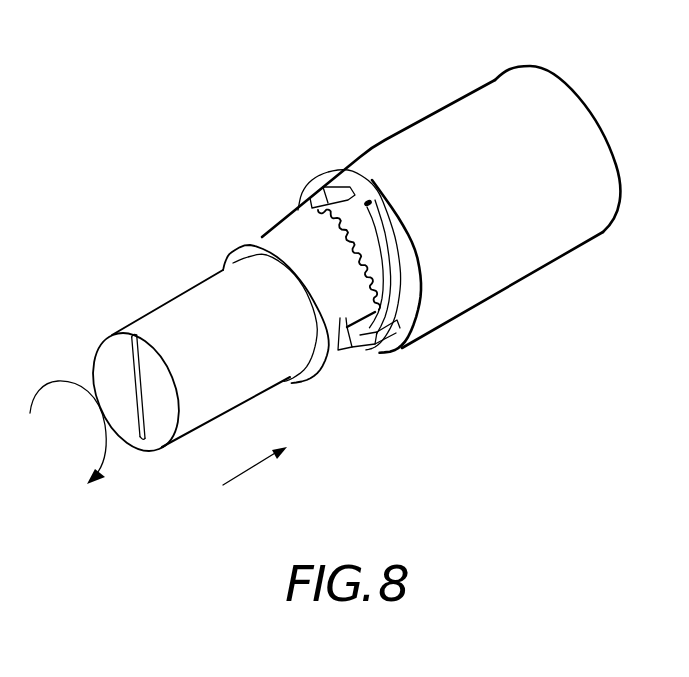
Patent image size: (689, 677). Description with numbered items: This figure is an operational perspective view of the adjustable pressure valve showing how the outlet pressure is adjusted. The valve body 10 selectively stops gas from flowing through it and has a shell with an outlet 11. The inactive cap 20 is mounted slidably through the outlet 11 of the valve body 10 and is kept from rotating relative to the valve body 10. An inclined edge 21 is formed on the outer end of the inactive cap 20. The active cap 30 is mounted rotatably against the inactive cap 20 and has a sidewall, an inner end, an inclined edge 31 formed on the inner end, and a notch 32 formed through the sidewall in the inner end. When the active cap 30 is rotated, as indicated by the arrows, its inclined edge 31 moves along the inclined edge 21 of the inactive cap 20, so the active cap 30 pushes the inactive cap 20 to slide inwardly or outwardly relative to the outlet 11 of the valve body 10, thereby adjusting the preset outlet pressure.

The valve body 10 is at (470, 102).
The outlet 11 is at (368, 202).
The inactive cap 20 is at (405, 312).
The inclined edge 21 is at (327, 185).
The active cap 30 is at (166, 318).
The inclined edge 31 is at (322, 213).
The notch 32 is at (343, 350).